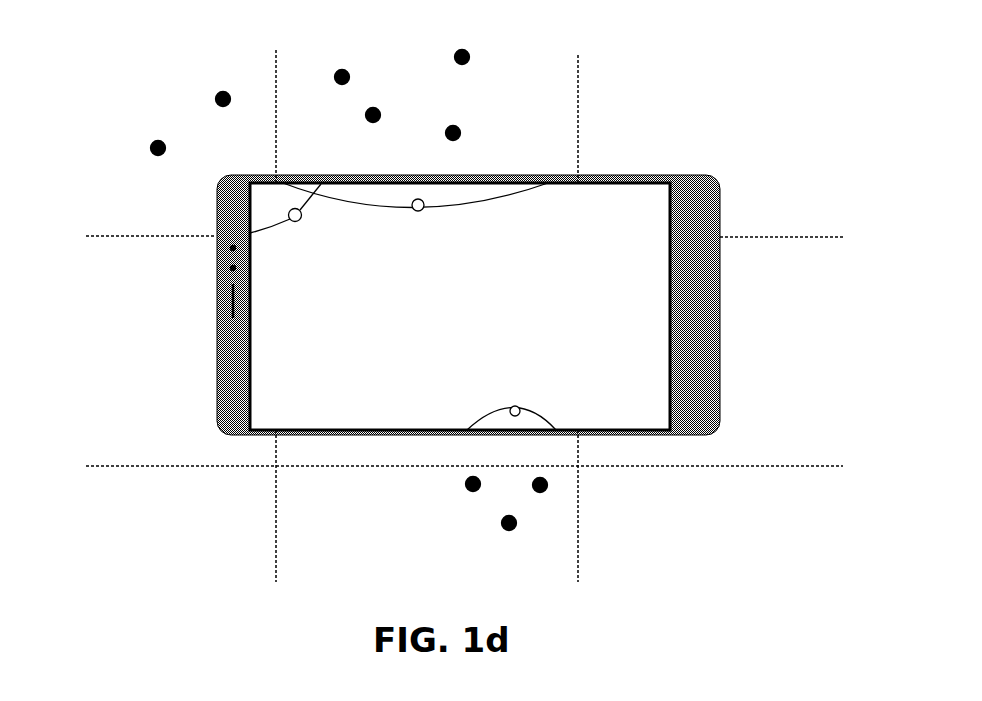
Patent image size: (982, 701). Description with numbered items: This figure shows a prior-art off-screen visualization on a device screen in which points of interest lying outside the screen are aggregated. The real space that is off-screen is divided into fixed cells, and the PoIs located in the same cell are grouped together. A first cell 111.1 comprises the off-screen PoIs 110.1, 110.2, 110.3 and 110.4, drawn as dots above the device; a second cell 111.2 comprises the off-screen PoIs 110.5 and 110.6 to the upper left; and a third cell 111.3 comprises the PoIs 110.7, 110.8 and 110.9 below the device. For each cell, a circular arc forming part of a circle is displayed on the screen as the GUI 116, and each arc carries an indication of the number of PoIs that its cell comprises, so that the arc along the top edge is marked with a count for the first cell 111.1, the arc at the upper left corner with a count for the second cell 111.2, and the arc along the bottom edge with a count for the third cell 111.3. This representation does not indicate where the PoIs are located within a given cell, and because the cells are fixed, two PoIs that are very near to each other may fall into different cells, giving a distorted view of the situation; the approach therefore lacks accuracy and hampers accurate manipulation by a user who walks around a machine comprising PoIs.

The off-screen PoI 110.1 is at (470, 60).
The off-screen PoI 110.2 is at (352, 75).
The off-screen PoI 110.3 is at (384, 112).
The off-screen PoI 110.4 is at (464, 134).
The off-screen PoI 110.5 is at (214, 100).
The off-screen PoI 110.6 is at (156, 158).
The PoI 110.7 is at (546, 492).
The PoI 110.8 is at (509, 534).
The PoI 110.9 is at (465, 494).
The first cell 111.1 is at (538, 83).
The second cell 111.2 is at (248, 85).
The third cell 111.3 is at (525, 548).
The GUI 116 is at (278, 222).